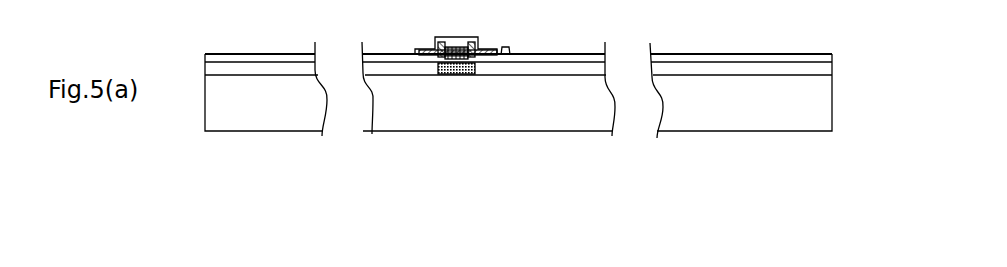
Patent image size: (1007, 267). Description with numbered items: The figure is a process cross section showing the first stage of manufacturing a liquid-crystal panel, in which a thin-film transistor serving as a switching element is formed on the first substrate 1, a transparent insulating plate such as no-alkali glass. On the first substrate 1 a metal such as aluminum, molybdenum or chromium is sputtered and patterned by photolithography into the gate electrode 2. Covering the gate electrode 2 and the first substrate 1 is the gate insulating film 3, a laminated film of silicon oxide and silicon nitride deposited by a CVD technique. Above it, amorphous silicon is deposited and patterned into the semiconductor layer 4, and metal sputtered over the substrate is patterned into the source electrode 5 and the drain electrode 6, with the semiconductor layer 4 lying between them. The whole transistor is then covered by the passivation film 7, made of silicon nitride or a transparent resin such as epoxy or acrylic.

The first substrate 1 is at (672, 105).
The gate electrode 2 is at (472, 77).
The gate insulating film 3 is at (722, 67).
The semiconductor layer 4 is at (448, 58).
The source electrode 5 is at (423, 57).
The drain electrode 6 is at (500, 62).
The passivation film 7 is at (740, 55).